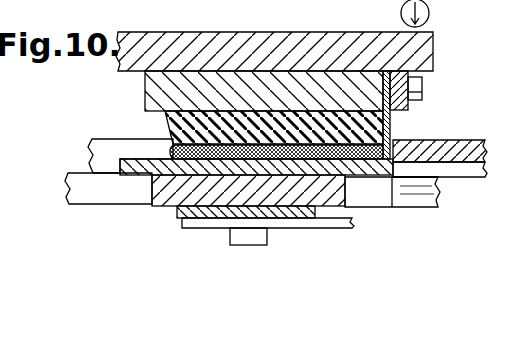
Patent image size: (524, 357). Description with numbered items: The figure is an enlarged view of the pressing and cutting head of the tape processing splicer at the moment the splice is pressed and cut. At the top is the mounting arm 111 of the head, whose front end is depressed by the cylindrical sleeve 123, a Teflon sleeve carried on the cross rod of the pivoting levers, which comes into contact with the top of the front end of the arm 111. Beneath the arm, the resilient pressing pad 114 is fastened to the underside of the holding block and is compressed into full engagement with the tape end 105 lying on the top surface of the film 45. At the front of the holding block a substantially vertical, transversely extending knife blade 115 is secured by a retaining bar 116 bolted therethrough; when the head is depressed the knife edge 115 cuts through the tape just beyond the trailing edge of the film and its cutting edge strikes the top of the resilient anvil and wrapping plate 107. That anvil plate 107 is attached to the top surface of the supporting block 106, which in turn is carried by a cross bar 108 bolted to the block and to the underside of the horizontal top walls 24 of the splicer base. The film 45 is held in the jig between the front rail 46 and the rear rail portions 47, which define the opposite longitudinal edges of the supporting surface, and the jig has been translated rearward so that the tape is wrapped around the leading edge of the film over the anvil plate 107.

The cylindrical sleeve 123 is at (430, 13).
The mounting arm 111 is at (427, 44).
The resilient pressing pad 114 is at (278, 111).
The retaining bar 116 is at (398, 87).
The knife blade 115 is at (393, 122).
The front rail 46 is at (447, 142).
The rear rail portions 47 is at (96, 140).
The tape end 105 is at (172, 143).
The supporting block 106 is at (157, 185).
The film 45 is at (165, 187).
The cross bar 108 is at (227, 218).
The resilient anvil and wrapping plate 107 is at (388, 180).
The horizontal top walls 24 is at (440, 190).